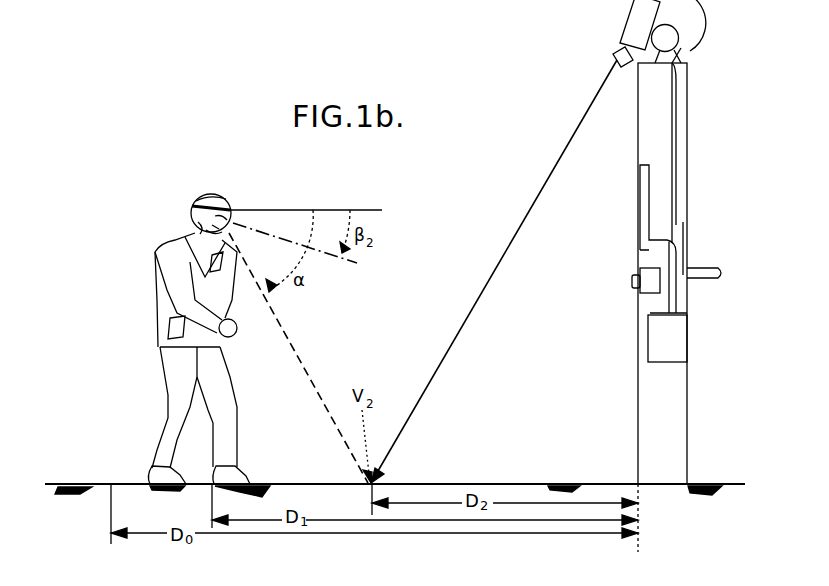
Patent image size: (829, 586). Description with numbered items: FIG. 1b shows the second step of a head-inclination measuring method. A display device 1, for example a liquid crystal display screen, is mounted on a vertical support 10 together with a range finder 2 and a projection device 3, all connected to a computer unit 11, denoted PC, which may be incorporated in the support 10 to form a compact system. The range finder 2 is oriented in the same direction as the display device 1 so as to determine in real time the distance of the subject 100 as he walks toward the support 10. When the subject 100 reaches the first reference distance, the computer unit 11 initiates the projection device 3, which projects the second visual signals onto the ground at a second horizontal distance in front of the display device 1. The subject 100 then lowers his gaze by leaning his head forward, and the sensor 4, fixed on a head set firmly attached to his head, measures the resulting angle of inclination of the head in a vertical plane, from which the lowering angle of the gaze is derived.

The display device 1 is at (645, 200).
The range finder 2 is at (647, 285).
The projection device 3 is at (632, 31).
The sensor 4 is at (193, 210).
The vertical support 10 is at (668, 424).
The computer unit 11 is at (668, 352).
The subject 100 is at (155, 254).